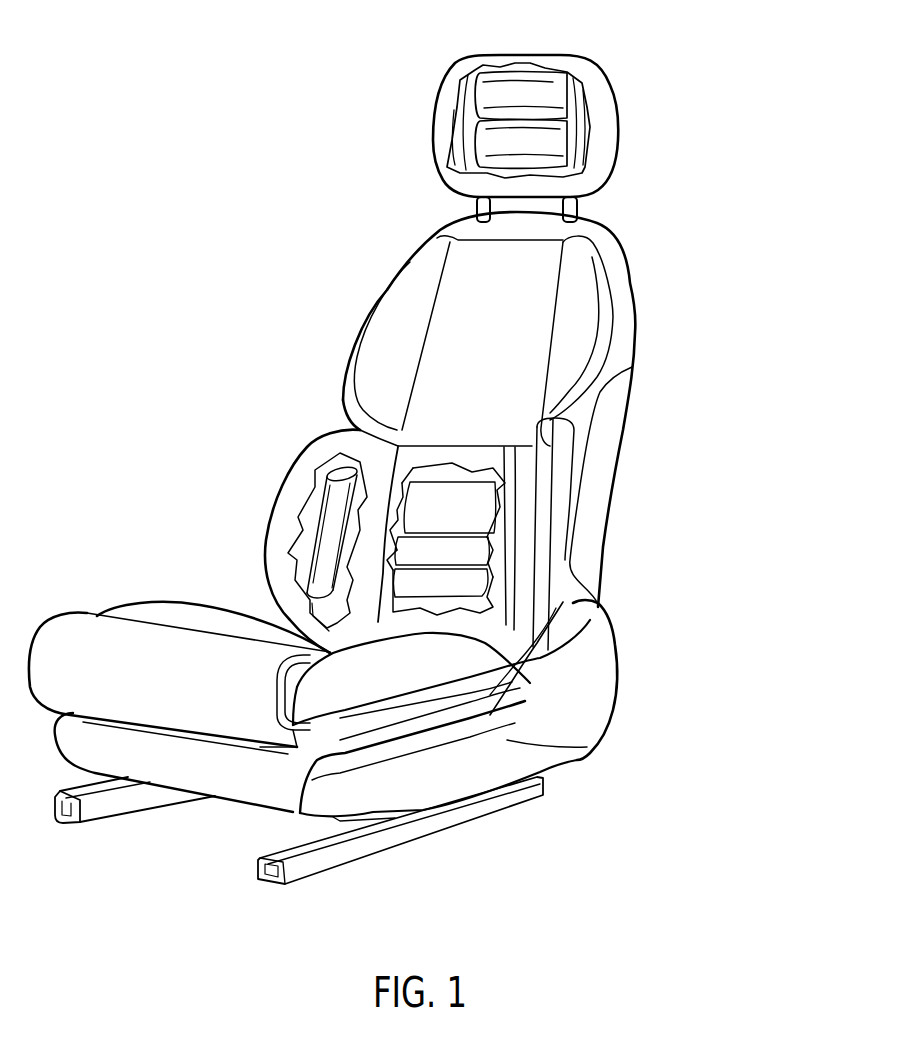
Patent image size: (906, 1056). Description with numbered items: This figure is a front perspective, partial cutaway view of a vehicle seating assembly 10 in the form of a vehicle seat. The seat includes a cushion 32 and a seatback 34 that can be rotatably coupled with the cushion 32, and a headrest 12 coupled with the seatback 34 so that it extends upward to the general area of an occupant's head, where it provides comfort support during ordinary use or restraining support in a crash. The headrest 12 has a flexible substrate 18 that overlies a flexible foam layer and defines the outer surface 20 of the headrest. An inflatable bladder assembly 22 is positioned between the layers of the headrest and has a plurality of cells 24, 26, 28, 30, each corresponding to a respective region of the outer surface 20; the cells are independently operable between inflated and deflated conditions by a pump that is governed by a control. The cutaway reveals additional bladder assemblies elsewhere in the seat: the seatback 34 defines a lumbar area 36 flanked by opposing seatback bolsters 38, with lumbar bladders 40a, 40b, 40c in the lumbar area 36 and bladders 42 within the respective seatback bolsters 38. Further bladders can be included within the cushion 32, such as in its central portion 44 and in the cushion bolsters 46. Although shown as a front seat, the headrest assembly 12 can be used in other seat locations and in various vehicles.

The vehicle seating assembly 10 is at (764, 133).
The headrest 12 is at (631, 55).
The flexible substrate 18 is at (600, 138).
The outer surface 20 is at (470, 185).
The inflatable bladder assembly 22 is at (530, 67).
The cell 24 is at (497, 89).
The cell 26 is at (547, 147).
The cell 28 is at (458, 119).
The cell 30 is at (577, 112).
The cushion 32 is at (503, 733).
The seatback 34 is at (600, 457).
The lumbar area 36 is at (500, 517).
The seatback bolsters 38 is at (285, 508).
The lumbar bladder 40a is at (442, 502).
The lumbar bladder 40b is at (473, 548).
The lumbar bladder 40c is at (472, 583).
The bladder 42 is at (323, 556).
The central portion 44 is at (305, 643).
The cushion bolsters 46 is at (137, 610).